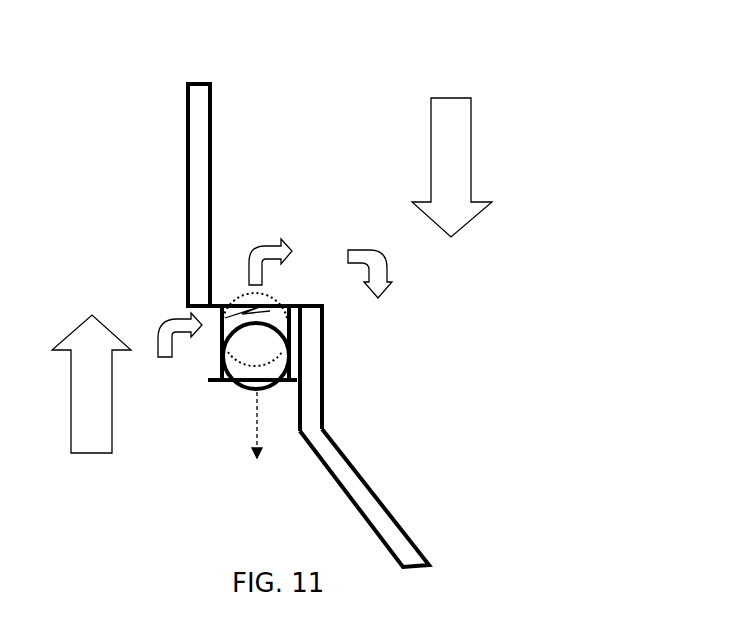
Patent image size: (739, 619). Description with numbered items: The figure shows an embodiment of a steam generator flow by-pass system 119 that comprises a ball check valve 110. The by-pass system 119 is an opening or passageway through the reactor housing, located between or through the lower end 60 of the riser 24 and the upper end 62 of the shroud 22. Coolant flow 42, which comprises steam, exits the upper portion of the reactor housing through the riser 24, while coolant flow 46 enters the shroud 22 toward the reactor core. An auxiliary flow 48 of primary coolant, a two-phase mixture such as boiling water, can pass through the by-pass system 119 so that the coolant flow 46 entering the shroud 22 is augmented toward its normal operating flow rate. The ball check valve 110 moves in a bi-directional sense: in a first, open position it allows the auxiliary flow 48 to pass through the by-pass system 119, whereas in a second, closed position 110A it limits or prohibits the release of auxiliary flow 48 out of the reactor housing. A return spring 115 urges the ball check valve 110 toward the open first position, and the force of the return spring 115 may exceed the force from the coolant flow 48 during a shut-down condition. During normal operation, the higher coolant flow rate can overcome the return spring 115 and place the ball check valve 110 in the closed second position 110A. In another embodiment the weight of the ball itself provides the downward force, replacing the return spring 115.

The shroud 22 is at (373, 478).
The riser 24 is at (177, 143).
The coolant flow 42 is at (418, 142).
The coolant flow 46 is at (117, 450).
The auxiliary flow 48 is at (163, 315).
The lower end of the riser 60 is at (176, 237).
The upper end of the shroud 62 is at (333, 383).
The ball check valve 110 is at (237, 390).
The second position of the ball check valve 110A is at (267, 298).
The return spring 115 is at (240, 316).
The steam generator flow by-pass system 119 is at (287, 190).